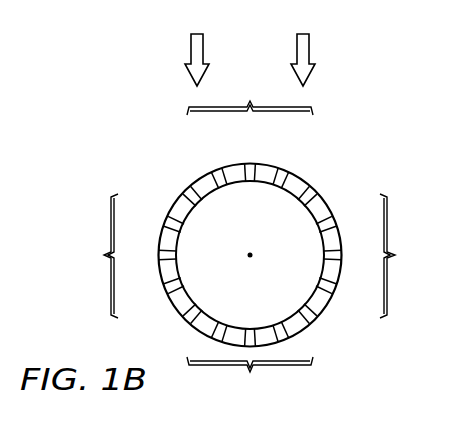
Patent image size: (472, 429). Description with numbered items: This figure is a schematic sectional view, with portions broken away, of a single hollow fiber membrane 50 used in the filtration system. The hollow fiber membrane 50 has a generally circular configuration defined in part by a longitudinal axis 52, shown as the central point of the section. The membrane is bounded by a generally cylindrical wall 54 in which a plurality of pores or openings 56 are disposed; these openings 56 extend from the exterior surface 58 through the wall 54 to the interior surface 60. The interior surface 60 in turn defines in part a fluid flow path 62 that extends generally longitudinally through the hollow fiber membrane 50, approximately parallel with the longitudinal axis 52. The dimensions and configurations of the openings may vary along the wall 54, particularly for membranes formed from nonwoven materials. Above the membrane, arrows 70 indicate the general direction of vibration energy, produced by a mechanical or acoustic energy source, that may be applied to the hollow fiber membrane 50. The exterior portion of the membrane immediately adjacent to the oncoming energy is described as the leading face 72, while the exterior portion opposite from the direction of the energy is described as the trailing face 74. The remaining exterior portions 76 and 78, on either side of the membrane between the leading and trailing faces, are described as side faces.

The hollow fiber membrane 50 is at (168, 181).
The longitudinal axis 52 is at (246, 252).
The cylindrical wall 54 is at (302, 179).
The pores or openings 56 is at (238, 173).
The exterior surface 58 is at (327, 308).
The interior surface 60 is at (260, 323).
The fluid flow path 62 is at (297, 263).
The arrows 70 is at (191, 53).
The leading face 72 is at (250, 95).
The trailing face 74 is at (250, 380).
The side face 76 is at (95, 256).
The side face 78 is at (403, 256).